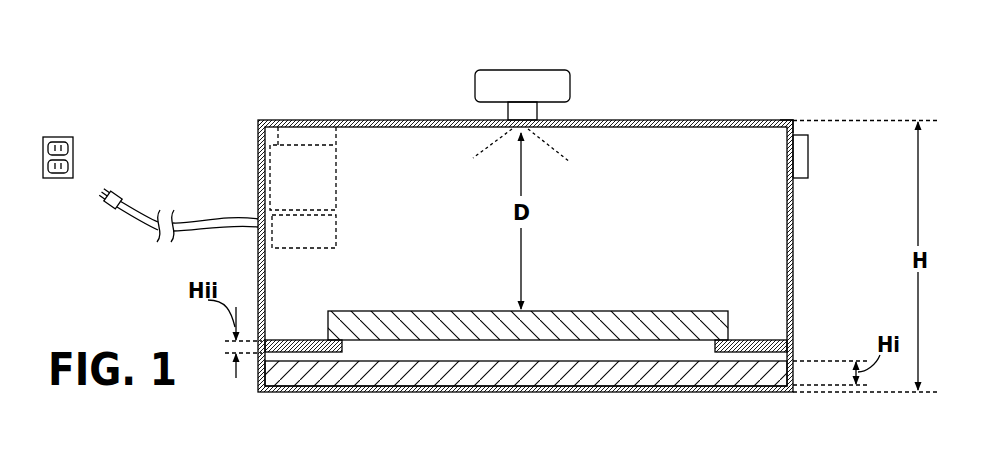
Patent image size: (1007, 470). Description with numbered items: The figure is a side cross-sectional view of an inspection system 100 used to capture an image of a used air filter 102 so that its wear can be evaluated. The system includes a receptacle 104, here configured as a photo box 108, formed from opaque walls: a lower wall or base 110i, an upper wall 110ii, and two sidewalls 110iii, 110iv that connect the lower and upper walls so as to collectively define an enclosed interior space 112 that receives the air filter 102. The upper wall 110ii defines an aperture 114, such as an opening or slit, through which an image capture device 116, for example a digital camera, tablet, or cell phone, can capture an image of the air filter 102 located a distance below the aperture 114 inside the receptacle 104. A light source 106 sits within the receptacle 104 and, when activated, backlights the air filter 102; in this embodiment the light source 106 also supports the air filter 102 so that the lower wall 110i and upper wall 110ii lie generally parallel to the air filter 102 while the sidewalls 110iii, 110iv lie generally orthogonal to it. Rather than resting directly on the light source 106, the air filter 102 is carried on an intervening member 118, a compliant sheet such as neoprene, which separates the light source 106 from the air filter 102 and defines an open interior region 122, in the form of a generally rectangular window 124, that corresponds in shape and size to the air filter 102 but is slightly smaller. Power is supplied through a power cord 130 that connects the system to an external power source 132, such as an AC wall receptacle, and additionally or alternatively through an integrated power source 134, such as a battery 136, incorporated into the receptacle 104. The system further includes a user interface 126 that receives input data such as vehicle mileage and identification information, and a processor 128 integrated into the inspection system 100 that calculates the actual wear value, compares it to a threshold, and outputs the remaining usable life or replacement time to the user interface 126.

The inspection system 100 is at (713, 57).
The air filter 102 is at (693, 311).
The receptacle 104 is at (760, 100).
The light source 106 is at (355, 375).
The photo box 108 is at (787, 118).
The lower wall (base) 110i is at (292, 393).
The upper wall 110ii is at (290, 120).
The sidewall 110iii is at (258, 148).
The sidewall 110iv is at (793, 226).
The enclosed interior space 112 is at (438, 140).
The aperture 114 is at (537, 121).
The image capture device 116 is at (566, 72).
The intervening member 118 is at (285, 336).
The open interior region 122 is at (592, 353).
The window 124 is at (640, 352).
The user interface 126 is at (808, 160).
The processor 128 is at (285, 233).
The power cord 130 is at (135, 222).
The external power source 132 is at (60, 137).
The integrated power source 134 is at (335, 140).
The battery 136 is at (258, 120).